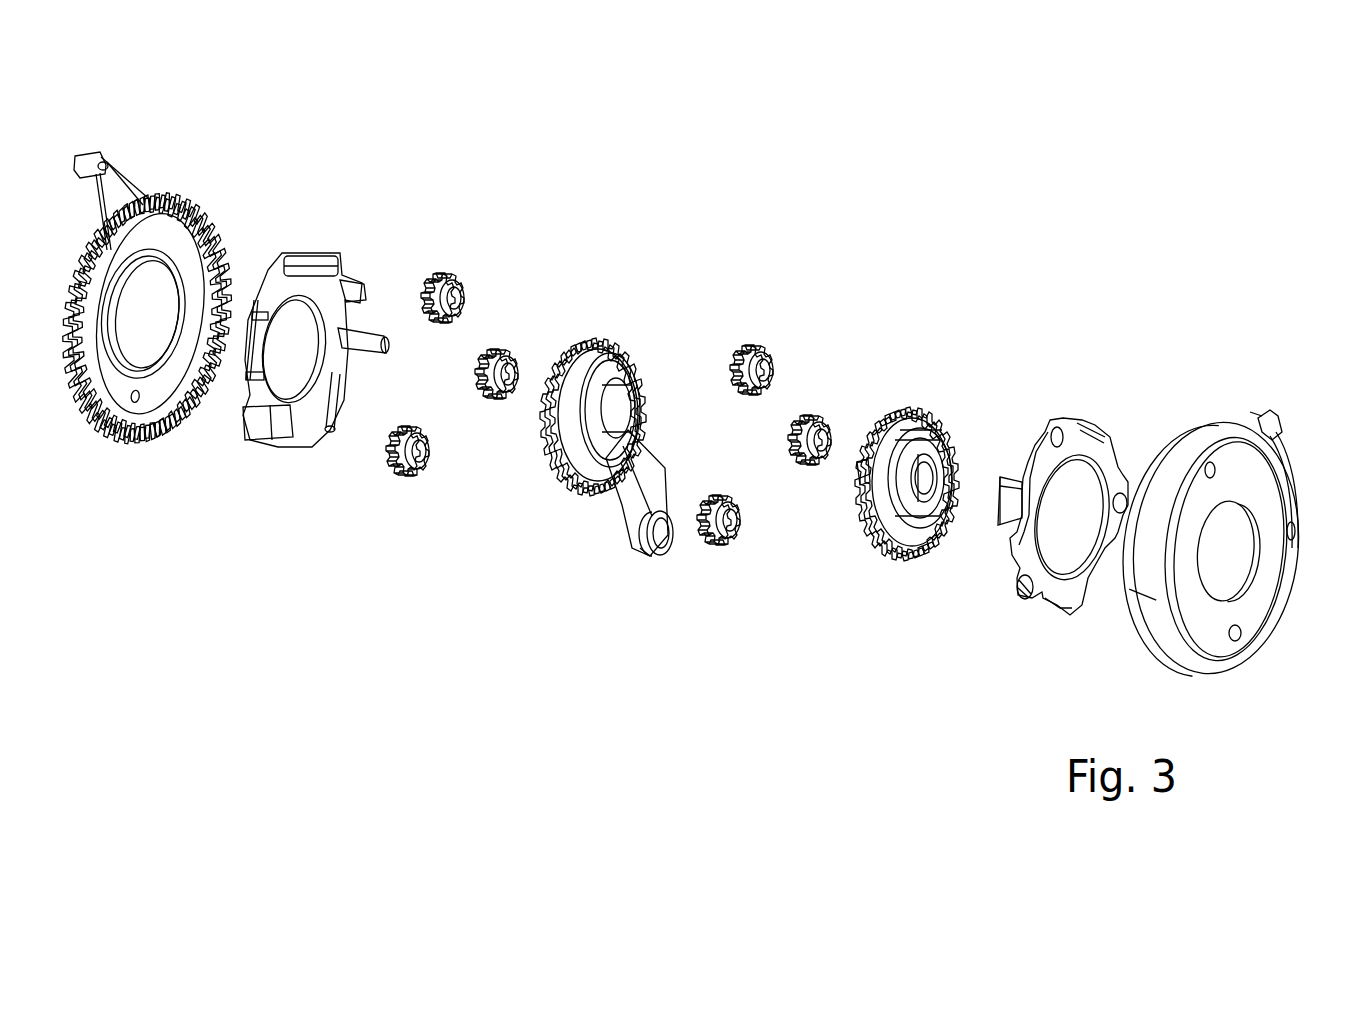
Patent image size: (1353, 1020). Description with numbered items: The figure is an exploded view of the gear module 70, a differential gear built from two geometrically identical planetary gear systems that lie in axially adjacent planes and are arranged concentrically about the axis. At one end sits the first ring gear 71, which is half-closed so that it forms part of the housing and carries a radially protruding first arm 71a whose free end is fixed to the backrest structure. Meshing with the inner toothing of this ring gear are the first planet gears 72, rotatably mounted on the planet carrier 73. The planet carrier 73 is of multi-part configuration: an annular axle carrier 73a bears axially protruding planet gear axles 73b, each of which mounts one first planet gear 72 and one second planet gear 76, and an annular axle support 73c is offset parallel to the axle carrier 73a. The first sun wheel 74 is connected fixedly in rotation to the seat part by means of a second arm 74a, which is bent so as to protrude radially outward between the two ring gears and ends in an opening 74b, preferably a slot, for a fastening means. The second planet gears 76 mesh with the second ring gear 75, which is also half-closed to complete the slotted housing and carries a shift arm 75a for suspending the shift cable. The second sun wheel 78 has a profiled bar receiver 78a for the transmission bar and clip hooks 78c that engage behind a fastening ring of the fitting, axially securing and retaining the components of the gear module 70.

The gear module 70 is at (652, 270).
The first ring gear 71 is at (210, 218).
The first arm 71a is at (117, 185).
The first planet gear 72 is at (443, 280).
The planet carrier 73 is at (296, 250).
The axle carrier 73a is at (300, 438).
The planet gear axle 73b is at (263, 413).
The axle support 73c is at (1037, 600).
The first sun wheel 74 is at (570, 488).
The second arm 74a is at (640, 470).
The opening 74b is at (658, 535).
The second ring gear 75 is at (1207, 446).
The shift arm 75a is at (1284, 456).
The second planet gear 76 is at (770, 355).
The second sun wheel 78 is at (938, 416).
The bar receiver 78a is at (923, 533).
The clip hook 78c is at (861, 474).